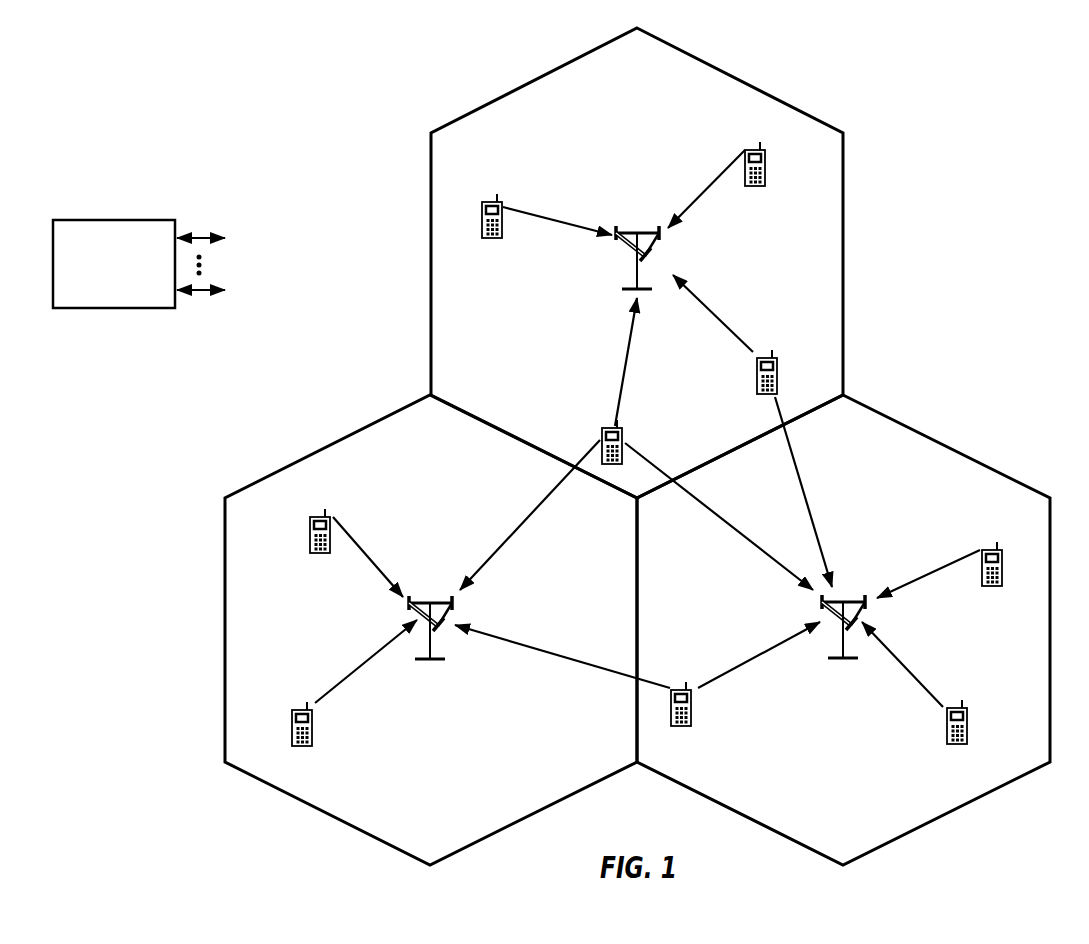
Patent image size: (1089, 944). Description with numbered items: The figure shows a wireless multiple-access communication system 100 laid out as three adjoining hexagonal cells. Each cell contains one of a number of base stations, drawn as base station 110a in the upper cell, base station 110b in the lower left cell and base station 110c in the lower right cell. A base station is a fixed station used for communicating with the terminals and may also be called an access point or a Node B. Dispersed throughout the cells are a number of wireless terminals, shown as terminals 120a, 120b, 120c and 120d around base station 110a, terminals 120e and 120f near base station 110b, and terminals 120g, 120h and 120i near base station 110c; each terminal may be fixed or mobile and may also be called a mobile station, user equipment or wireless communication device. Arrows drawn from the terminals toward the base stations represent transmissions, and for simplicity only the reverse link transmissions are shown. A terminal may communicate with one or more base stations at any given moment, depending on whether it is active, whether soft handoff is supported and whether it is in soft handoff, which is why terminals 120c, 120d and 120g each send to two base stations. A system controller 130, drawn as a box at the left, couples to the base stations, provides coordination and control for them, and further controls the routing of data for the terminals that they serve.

The wireless multiple-access communication system 100 is at (1004, 59).
The base station 110a is at (635, 230).
The base station 110b is at (425, 600).
The base station 110c is at (846, 599).
The wireless terminal 120a is at (754, 149).
The wireless terminal 120b is at (490, 201).
The wireless terminal 120c is at (609, 427).
The wireless terminal 120d is at (775, 344).
The wireless terminal 120e is at (320, 516).
The wireless terminal 120f is at (302, 709).
The wireless terminal 120g is at (688, 677).
The wireless terminal 120h is at (965, 694).
The wireless terminal 120i is at (988, 549).
The system controller 130 is at (110, 219).